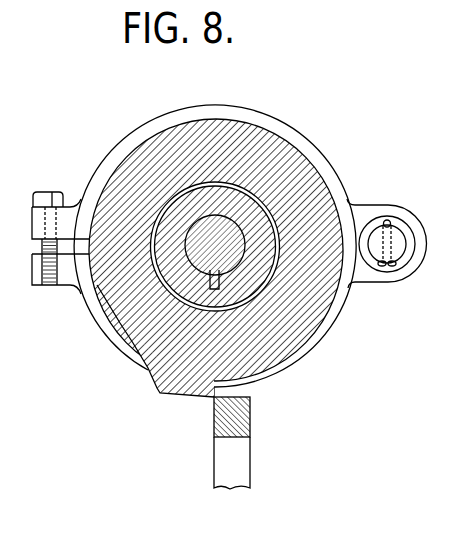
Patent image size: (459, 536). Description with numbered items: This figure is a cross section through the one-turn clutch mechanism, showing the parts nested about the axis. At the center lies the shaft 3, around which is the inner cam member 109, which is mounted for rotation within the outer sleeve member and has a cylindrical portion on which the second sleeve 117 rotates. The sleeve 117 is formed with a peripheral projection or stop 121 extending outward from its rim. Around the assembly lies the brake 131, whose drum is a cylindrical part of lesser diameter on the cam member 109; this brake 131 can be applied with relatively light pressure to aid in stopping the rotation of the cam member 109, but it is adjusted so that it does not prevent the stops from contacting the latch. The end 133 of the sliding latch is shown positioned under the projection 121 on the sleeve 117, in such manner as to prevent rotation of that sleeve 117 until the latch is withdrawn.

The shaft 3 is at (245, 261).
The inner cam member 109 is at (157, 211).
The second sleeve 117 is at (228, 135).
The peripheral projection or stop 121 is at (190, 401).
The brake 131 is at (298, 134).
The end of the latch 133 is at (254, 418).